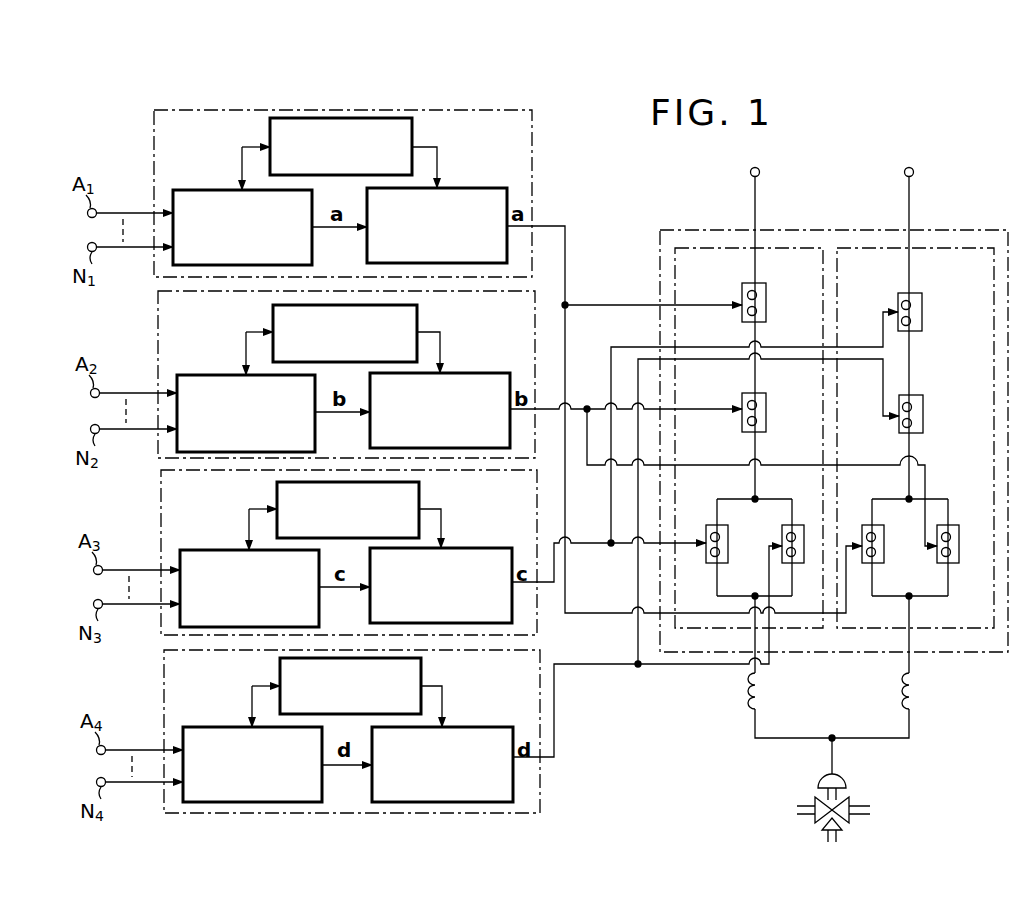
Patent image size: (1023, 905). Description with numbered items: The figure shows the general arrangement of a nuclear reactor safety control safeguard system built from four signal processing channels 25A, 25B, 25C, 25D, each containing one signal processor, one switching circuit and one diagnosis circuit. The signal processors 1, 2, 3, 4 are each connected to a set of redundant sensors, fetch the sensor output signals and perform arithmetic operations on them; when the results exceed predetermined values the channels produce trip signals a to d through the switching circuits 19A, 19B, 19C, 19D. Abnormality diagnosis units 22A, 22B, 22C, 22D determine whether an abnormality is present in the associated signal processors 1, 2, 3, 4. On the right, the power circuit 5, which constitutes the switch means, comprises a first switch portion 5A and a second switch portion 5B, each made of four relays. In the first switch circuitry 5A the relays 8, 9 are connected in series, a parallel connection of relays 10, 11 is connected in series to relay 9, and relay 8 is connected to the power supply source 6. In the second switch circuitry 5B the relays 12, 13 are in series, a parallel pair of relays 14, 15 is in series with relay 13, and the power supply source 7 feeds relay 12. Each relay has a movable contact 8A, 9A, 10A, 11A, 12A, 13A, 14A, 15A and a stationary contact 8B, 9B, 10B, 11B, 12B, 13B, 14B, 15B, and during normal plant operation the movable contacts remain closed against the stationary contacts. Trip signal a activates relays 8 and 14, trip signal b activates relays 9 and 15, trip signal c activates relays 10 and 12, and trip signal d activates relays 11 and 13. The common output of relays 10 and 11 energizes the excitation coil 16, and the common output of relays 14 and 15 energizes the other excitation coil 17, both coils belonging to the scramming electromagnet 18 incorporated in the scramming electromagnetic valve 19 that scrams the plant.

The signal processor 1 is at (190, 189).
The signal processor 2 is at (197, 374).
The signal processor 3 is at (200, 550).
The signal processor 4 is at (203, 726).
The power circuit 5 is at (978, 225).
The first switch portion 5A is at (692, 246).
The second switch portion 5B is at (856, 245).
The power supply source 6 is at (759, 170).
The power supply source 7 is at (913, 170).
The relay 8 is at (751, 301).
The movable contact 8A is at (758, 297).
The stationary contact 8B is at (747, 294).
The relay 9 is at (752, 411).
The movable contact 9A is at (760, 405).
The stationary contact 9B is at (747, 405).
The relay 10 is at (721, 541).
The movable contact 10A is at (721, 554).
The stationary contact 10B is at (704, 530).
The relay 11 is at (787, 537).
The movable contact 11A is at (797, 555).
The stationary contact 11B is at (785, 539).
The relay 12 is at (911, 306).
The movable contact 12A is at (914, 306).
The stationary contact 12B is at (901, 304).
The relay 13 is at (916, 422).
The movable contact 13A is at (921, 412).
The stationary contact 13B is at (902, 425).
The relay 14 is at (890, 551).
The movable contact 14A is at (878, 554).
The stationary contact 14B is at (864, 531).
The relay 15 is at (935, 538).
The movable contact 15A is at (950, 535).
The stationary contact 15B is at (943, 553).
The excitation coil 16 is at (762, 688).
The excitation coil 17 is at (923, 688).
The scramming electromagnet 18 is at (842, 778).
The scramming electromagnetic valve 19 is at (843, 825).
The switching circuit 19A is at (485, 187).
The switching circuit 19B is at (487, 371).
The switching circuit 19C is at (489, 548).
The switching circuit 19D is at (490, 725).
The diagnosis circuit 22A is at (413, 129).
The diagnosis circuit 22B is at (418, 312).
The diagnosis circuit 22C is at (420, 492).
The diagnosis circuit 22D is at (421, 668).
The signal processing channel 25A is at (153, 170).
The signal processing channel 25B is at (155, 352).
The signal processing channel 25C is at (157, 534).
The signal processing channel 25D is at (160, 714).